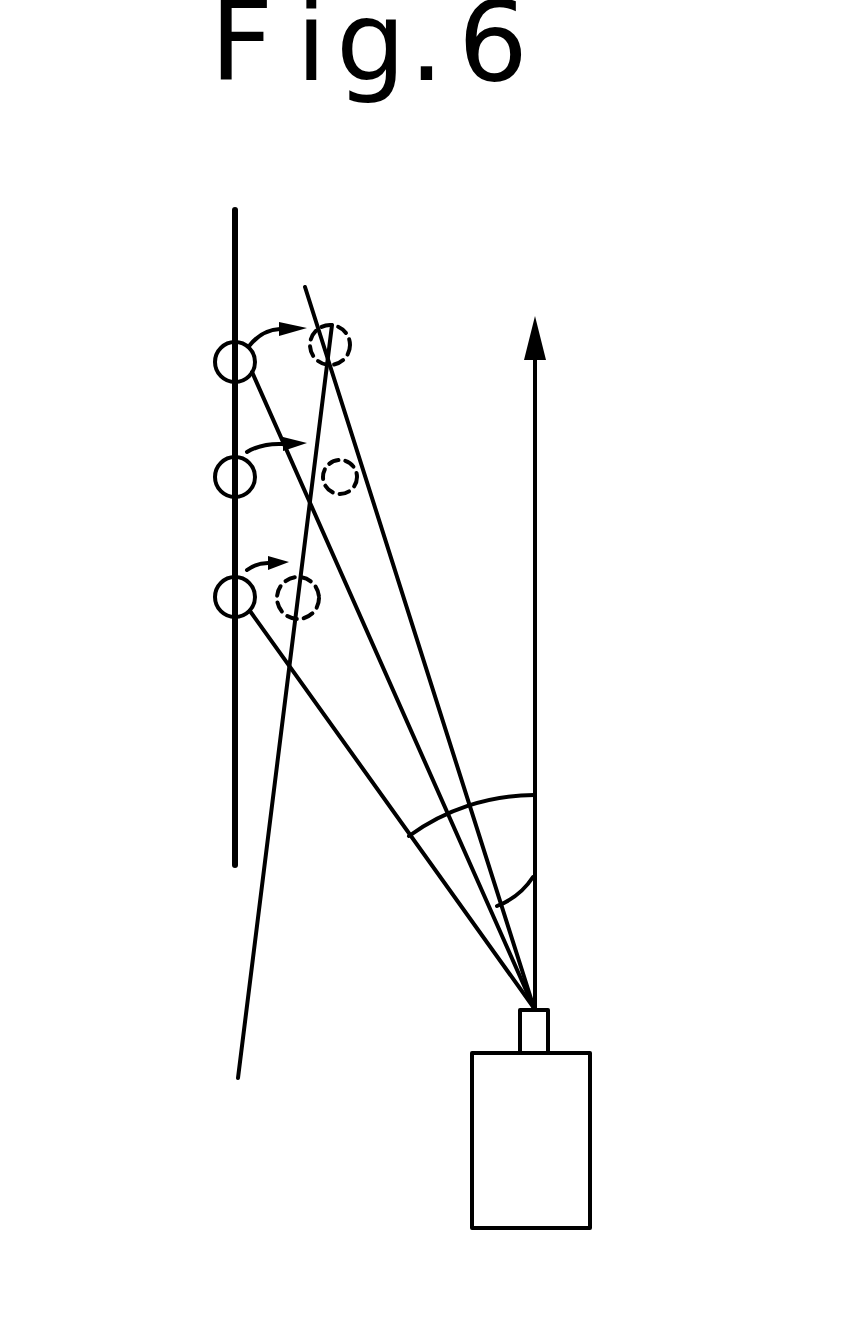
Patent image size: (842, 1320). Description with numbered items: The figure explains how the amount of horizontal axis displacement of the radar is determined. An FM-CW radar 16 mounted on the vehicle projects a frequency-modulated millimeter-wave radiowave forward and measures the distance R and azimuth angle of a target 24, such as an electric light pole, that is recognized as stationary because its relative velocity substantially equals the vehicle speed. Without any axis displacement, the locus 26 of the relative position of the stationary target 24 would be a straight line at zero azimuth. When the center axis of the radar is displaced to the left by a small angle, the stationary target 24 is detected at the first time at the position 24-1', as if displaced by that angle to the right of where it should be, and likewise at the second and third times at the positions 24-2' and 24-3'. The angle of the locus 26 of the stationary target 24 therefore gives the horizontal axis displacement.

The stationary target 24 is at (217, 597).
The detected position of stationary target at time T1 24-1' is at (415, 295).
The detected position of stationary target at time T2 24-2' is at (423, 434).
The detected position of stationary target at time T3 24-3' is at (401, 548).
The locus 26 is at (233, 713).
The FM-CW radar 16 is at (548, 1032).
The distance R is at (388, 683).